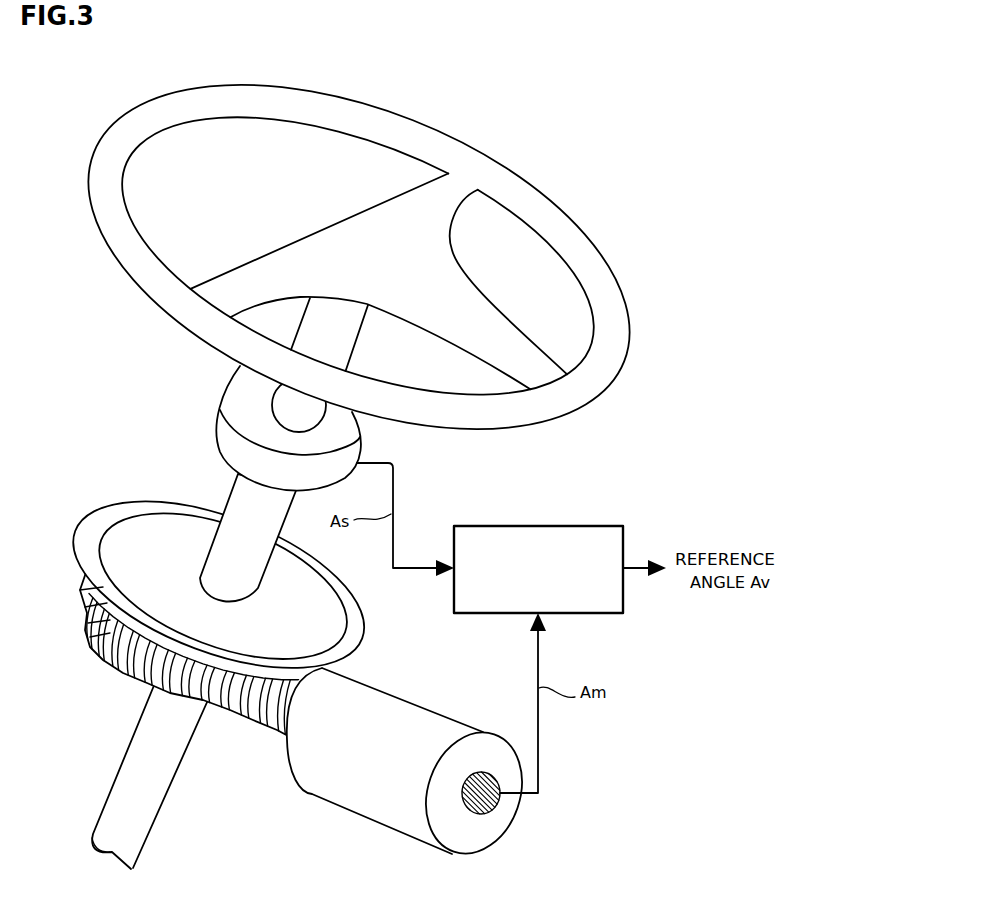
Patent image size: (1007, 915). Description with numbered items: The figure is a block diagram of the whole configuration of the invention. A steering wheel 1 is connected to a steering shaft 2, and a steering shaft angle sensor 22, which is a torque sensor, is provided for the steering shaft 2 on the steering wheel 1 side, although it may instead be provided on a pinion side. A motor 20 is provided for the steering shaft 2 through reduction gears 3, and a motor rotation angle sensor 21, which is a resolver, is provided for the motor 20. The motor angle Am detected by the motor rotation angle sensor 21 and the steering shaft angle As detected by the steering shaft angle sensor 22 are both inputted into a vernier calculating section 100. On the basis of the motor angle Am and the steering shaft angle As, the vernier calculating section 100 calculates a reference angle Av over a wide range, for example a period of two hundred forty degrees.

The steering wheel 1 is at (567, 214).
The steering shaft 2 is at (132, 731).
The reduction gears 3 is at (84, 622).
The motor 20 is at (345, 806).
The motor rotation angle sensor 21 is at (493, 814).
The steering shaft angle sensor 22 is at (218, 409).
The vernier calculating section 100 is at (600, 525).